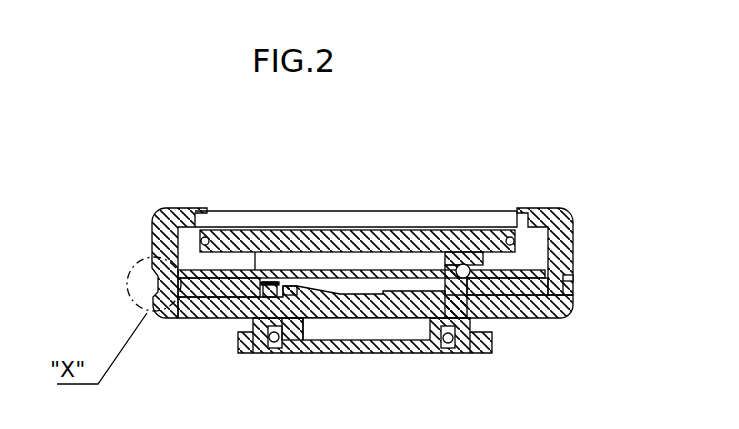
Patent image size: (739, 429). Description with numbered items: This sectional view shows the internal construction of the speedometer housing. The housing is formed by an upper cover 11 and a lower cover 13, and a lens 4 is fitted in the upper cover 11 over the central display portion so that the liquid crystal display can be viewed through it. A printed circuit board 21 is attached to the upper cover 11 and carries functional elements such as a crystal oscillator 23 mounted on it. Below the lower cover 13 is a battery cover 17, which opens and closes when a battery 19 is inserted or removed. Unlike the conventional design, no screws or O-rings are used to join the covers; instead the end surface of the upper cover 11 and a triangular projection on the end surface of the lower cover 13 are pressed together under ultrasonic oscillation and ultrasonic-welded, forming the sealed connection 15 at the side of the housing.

The lens 4 is at (228, 217).
The upper cover 11 is at (574, 219).
The lower cover 13 is at (567, 316).
The connection 15 is at (574, 300).
The battery cover 17 is at (400, 353).
The battery 19 is at (320, 318).
The printed circuit board 21 is at (348, 270).
The crystal oscillator 23 is at (463, 252).